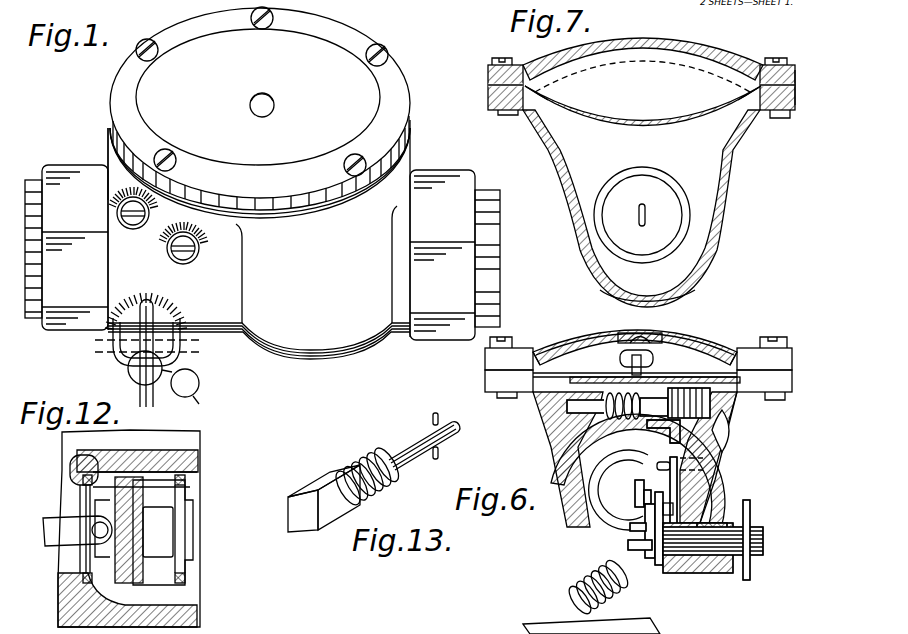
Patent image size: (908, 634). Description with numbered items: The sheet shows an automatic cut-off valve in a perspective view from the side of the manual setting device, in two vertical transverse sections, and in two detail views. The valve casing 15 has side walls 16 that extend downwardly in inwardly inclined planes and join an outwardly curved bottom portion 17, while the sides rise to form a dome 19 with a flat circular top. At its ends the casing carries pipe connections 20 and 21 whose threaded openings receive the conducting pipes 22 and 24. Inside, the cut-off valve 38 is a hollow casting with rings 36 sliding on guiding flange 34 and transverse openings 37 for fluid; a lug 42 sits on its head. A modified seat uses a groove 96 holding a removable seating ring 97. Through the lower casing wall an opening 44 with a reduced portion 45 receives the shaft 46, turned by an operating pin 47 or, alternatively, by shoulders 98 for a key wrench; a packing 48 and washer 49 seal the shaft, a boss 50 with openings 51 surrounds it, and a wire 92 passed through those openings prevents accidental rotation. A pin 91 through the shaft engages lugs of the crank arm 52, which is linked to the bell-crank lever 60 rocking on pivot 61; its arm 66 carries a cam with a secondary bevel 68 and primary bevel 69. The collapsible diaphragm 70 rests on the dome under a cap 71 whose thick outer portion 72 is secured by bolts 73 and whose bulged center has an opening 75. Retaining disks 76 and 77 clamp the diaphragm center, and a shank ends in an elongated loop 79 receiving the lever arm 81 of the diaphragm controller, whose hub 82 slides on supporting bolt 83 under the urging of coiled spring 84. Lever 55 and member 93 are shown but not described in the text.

In FIG. 1, the valve casing 15 is at (427, 199).
In FIG. 1, the side walls 16 is at (259, 243).
In FIG. 7, the side walls 16 is at (731, 188).
In FIG. 6, the side walls 16 is at (582, 535).
In FIG. 7, the bottom portion 17 is at (699, 290).
In FIG. 6, the bottom portion 17 is at (665, 578).
In FIG. 1, the dome 19 is at (109, 153).
In FIG. 1, the pipe connection 20 is at (60, 165).
In FIG. 1, the pipe connection 21 is at (430, 172).
In FIG. 1, the conducting pipe 22 is at (36, 275).
In FIG. 7, the conducting pipe 22 is at (790, 74).
In FIG. 1, the conducting pipe 24 is at (492, 303).
In FIG. 12, the guiding flange 34 is at (140, 466).
In FIG. 12, the rings 36 is at (190, 590).
In FIG. 12, the transverse openings 37 is at (165, 522).
In FIG. 7, the valve 38 is at (622, 192).
In FIG. 6, the valve 38 is at (600, 496).
In FIG. 12, the valve 38 is at (115, 575).
In FIG. 7, the lug 42 is at (648, 208).
In FIG. 6, the lug 42 is at (634, 520).
In FIG. 6, the opening 44 is at (733, 523).
In FIG. 6, the reduced portion of opening 45 is at (600, 553).
In FIG. 1, the shaft 46 is at (140, 373).
In FIG. 6, the shaft 46 is at (760, 532).
In FIG. 1, the operating pin 47 is at (146, 302).
In FIG. 6, the operating pin 47 is at (751, 505).
In FIG. 6, the packing 48 is at (708, 580).
In FIG. 6, the washer 49 is at (720, 580).
In FIG. 1, the boss 50 is at (176, 312).
In FIG. 1, the openings 51 is at (182, 324).
In FIG. 6, the crank arm 52 is at (656, 578).
In FIG. 12, the lever 55 is at (48, 520).
In FIG. 6, the bell-crank lever 60 is at (656, 466).
In FIG. 1, the pivot 61 is at (203, 246).
In FIG. 6, the pivot 61 is at (748, 434).
In FIG. 6, the arm of bell-crank lever 66 is at (615, 624).
In FIG. 6, the secondary bevel 68 is at (674, 627).
In FIG. 6, the primary bevel 69 is at (670, 434).
In FIG. 1, the collapsible diaphragm 70 is at (414, 150).
In FIG. 7, the collapsible diaphragm 70 is at (643, 115).
In FIG. 6, the collapsible diaphragm 70 is at (636, 367).
In FIG. 1, the cap 71 is at (258, 97).
In FIG. 7, the cap 71 is at (689, 46).
In FIG. 6, the cap 71 is at (545, 346).
In FIG. 1, the outer portion of cap 72 is at (109, 94).
In FIG. 1, the bolts 73 is at (145, 40).
In FIG. 7, the bolts 73 is at (502, 60).
In FIG. 6, the bolts 73 is at (774, 340).
In FIG. 1, the opening 75 is at (275, 100).
In FIG. 7, the opening 75 is at (656, 42).
In FIG. 6, the opening 75 is at (660, 336).
In FIG. 6, the retaining disk 76 is at (628, 334).
In FIG. 6, the retaining disk 77 is at (738, 335).
In FIG. 6, the loop 79 is at (620, 359).
In FIG. 6, the lever arm 81 is at (622, 399).
In FIG. 6, the hub 82 is at (665, 396).
In FIG. 1, the supporting bolt 83 is at (131, 230).
In FIG. 6, the supporting bolt 83 is at (548, 428).
In FIG. 6, the coiled spring 84 is at (548, 460).
In FIG. 6, the pin 91 is at (645, 545).
In FIG. 1, the wire 92 is at (188, 343).
In FIG. 1, the ball 93 is at (200, 387).
In FIG. 12, the groove 96 is at (88, 590).
In FIG. 12, the seating ring 97 is at (118, 468).
In FIG. 13, the shoulders 98 is at (300, 496).